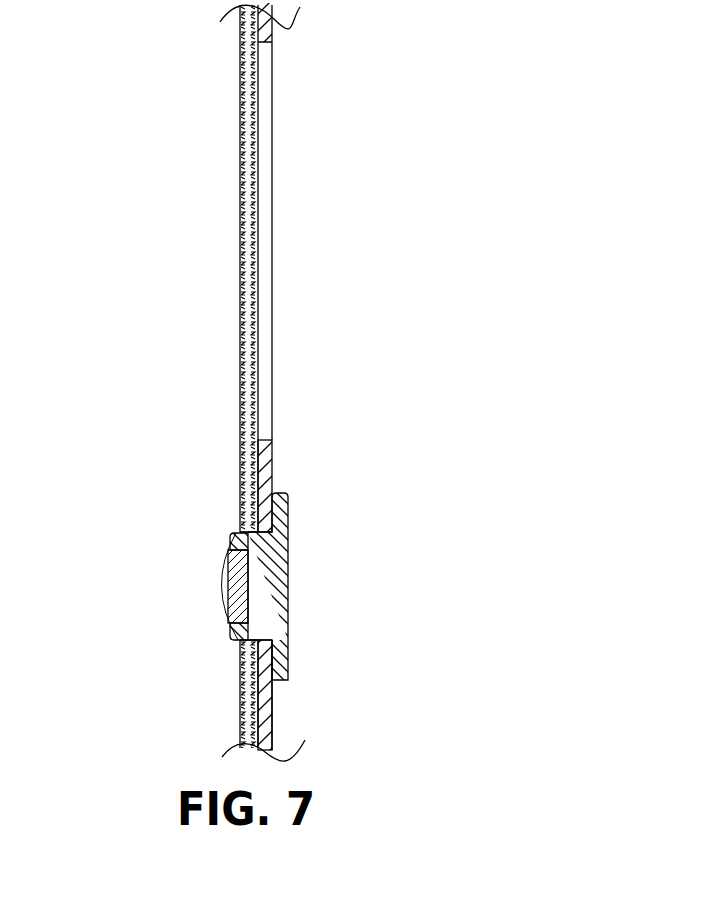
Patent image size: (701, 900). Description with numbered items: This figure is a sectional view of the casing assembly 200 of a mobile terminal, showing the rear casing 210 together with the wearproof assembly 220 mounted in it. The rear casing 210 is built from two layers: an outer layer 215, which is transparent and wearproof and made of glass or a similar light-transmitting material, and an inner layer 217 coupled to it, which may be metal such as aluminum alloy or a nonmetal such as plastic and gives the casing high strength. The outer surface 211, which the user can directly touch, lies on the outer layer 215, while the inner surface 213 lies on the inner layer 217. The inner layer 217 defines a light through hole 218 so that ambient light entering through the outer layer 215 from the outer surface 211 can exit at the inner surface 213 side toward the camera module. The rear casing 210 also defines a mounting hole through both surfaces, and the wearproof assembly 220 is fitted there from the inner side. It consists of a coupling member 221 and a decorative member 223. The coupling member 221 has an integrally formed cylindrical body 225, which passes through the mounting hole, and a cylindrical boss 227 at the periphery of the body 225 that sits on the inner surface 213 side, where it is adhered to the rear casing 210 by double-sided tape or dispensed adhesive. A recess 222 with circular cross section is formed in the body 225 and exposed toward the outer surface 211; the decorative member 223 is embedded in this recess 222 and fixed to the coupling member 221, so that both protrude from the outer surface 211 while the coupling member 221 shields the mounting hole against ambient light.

The casing assembly 200 is at (236, 98).
The rear casing 210 is at (250, 342).
The outer surface 211 is at (247, 242).
The outer layer 215 is at (250, 183).
The light through hole 218 is at (265, 368).
The inner surface 213 is at (272, 463).
The inner layer 217 is at (262, 708).
The wearproof assembly 220 is at (233, 535).
The coupling member 221 is at (270, 590).
The decorative member 223 is at (225, 590).
The recess 222 is at (228, 613).
The body 225 is at (232, 632).
The boss 227 is at (280, 658).